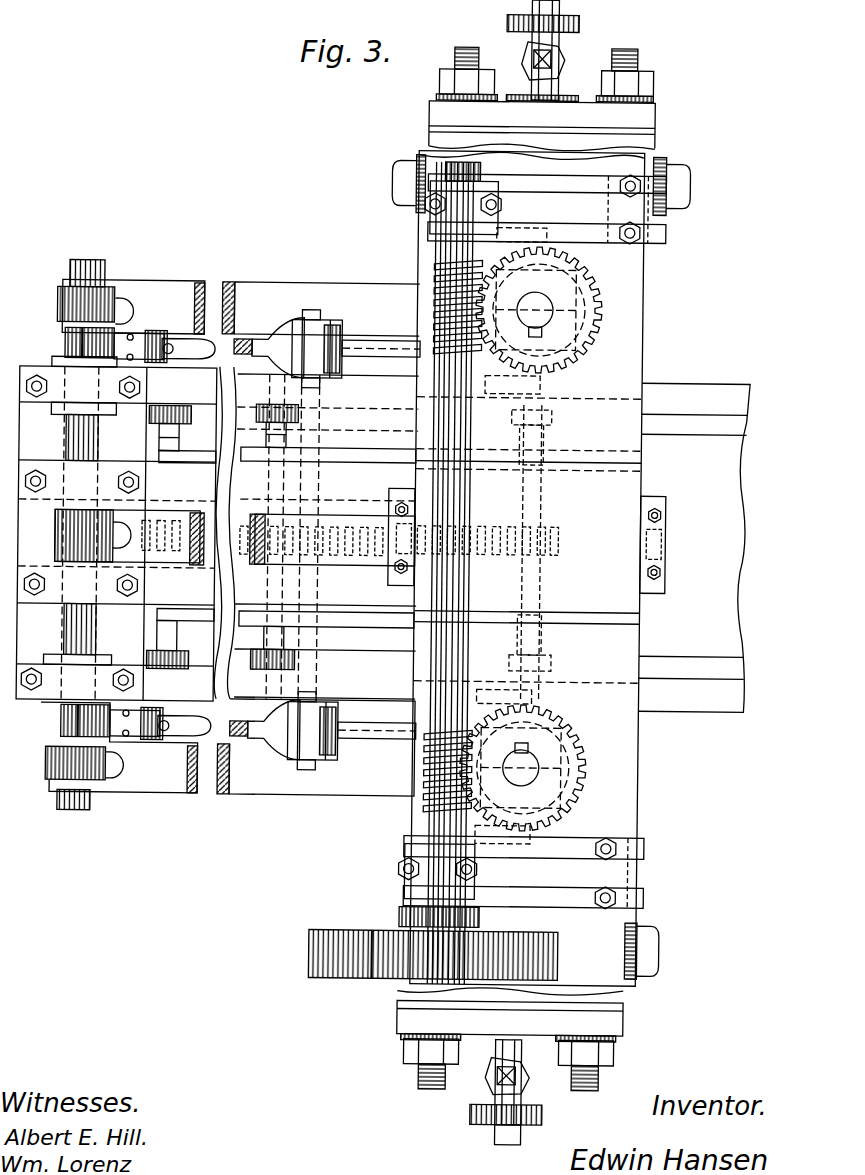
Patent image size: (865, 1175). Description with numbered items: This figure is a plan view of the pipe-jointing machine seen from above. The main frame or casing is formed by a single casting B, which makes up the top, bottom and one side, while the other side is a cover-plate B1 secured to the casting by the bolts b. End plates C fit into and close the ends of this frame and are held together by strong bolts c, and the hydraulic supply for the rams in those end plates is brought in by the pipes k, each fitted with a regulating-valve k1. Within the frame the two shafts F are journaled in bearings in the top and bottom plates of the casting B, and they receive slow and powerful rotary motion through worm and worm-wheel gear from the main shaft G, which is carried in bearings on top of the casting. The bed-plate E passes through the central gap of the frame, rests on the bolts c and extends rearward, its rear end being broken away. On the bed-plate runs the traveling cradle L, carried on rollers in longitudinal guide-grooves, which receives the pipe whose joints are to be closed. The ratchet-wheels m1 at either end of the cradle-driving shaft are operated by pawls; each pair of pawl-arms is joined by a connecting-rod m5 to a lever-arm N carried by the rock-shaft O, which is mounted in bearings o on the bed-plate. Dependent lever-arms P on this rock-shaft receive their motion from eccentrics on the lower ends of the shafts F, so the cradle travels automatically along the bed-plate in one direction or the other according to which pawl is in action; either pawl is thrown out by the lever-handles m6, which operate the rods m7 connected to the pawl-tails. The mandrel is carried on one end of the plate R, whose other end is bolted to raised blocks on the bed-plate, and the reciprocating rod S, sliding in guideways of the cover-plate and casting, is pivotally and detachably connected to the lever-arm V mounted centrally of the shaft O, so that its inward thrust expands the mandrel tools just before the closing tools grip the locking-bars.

The casting B is at (408, 255).
The cover-plate B1 is at (412, 998).
The shafts F is at (544, 318).
The main shaft G is at (488, 552).
The bed-plate E is at (740, 433).
The bolts b is at (392, 180).
The end plates C is at (435, 115).
The bolts c is at (461, 52).
The regulating-valves k1 is at (554, 60).
The pipes k is at (504, 1130).
The rods m7 is at (270, 348).
The connecting-rod m5 is at (320, 330).
The ratchet-wheel m1 is at (345, 350).
The traveling cradle L is at (338, 455).
The reciprocating rod S is at (338, 560).
The plate R is at (327, 490).
The bearings o is at (55, 365).
The lever-arm V is at (60, 532).
The rock-shaft O is at (85, 262).
The lever-arms P is at (62, 305).
The lever-arm N is at (65, 343).
The lever-handles m6 is at (165, 340).